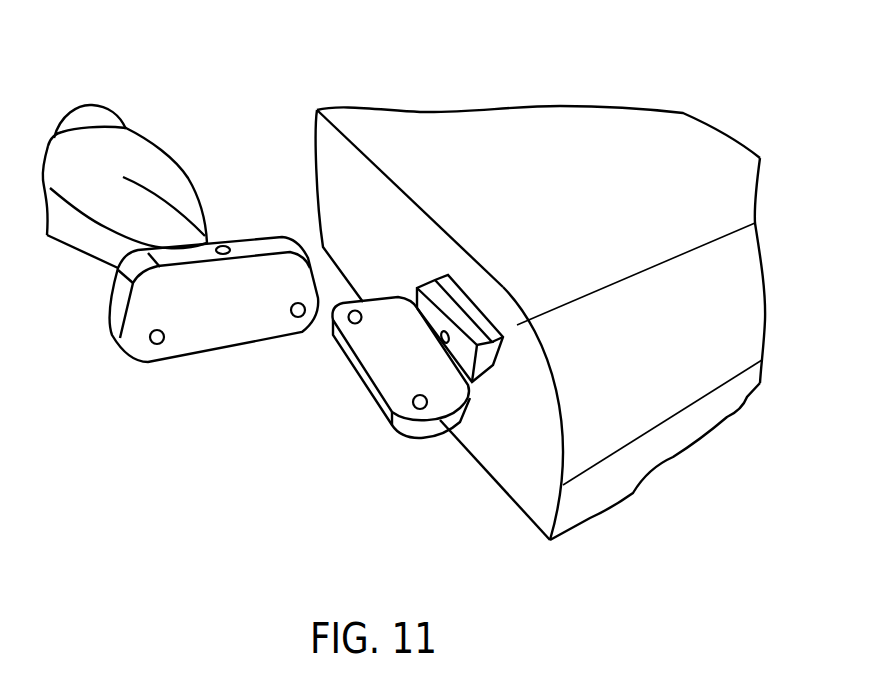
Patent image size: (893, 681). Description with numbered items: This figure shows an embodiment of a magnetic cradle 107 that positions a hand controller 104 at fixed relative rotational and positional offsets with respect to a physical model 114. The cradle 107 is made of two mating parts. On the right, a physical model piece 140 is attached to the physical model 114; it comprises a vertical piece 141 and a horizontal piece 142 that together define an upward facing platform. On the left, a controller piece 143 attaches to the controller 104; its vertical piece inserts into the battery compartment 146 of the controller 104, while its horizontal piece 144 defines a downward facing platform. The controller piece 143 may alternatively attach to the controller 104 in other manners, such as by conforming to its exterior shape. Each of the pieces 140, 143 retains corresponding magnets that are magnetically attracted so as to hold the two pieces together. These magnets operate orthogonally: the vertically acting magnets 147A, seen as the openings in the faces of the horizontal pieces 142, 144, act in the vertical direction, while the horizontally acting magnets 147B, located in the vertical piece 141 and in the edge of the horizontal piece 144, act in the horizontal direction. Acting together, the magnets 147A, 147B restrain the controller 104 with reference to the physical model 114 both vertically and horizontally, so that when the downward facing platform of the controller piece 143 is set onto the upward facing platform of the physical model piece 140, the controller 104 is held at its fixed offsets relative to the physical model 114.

The hand controller 104 is at (117, 77).
The battery compartment 146 is at (150, 208).
The controller piece 143 is at (282, 172).
The horizontally acting magnets 147B is at (223, 246).
The horizontal piece 144 is at (116, 314).
The vertically acting magnets 147A is at (295, 316).
The cradle 107 is at (277, 473).
The physical model 114 is at (655, 181).
The physical model piece 140 is at (525, 281).
The vertical piece 141 is at (487, 367).
The horizontal piece 142 is at (443, 420).